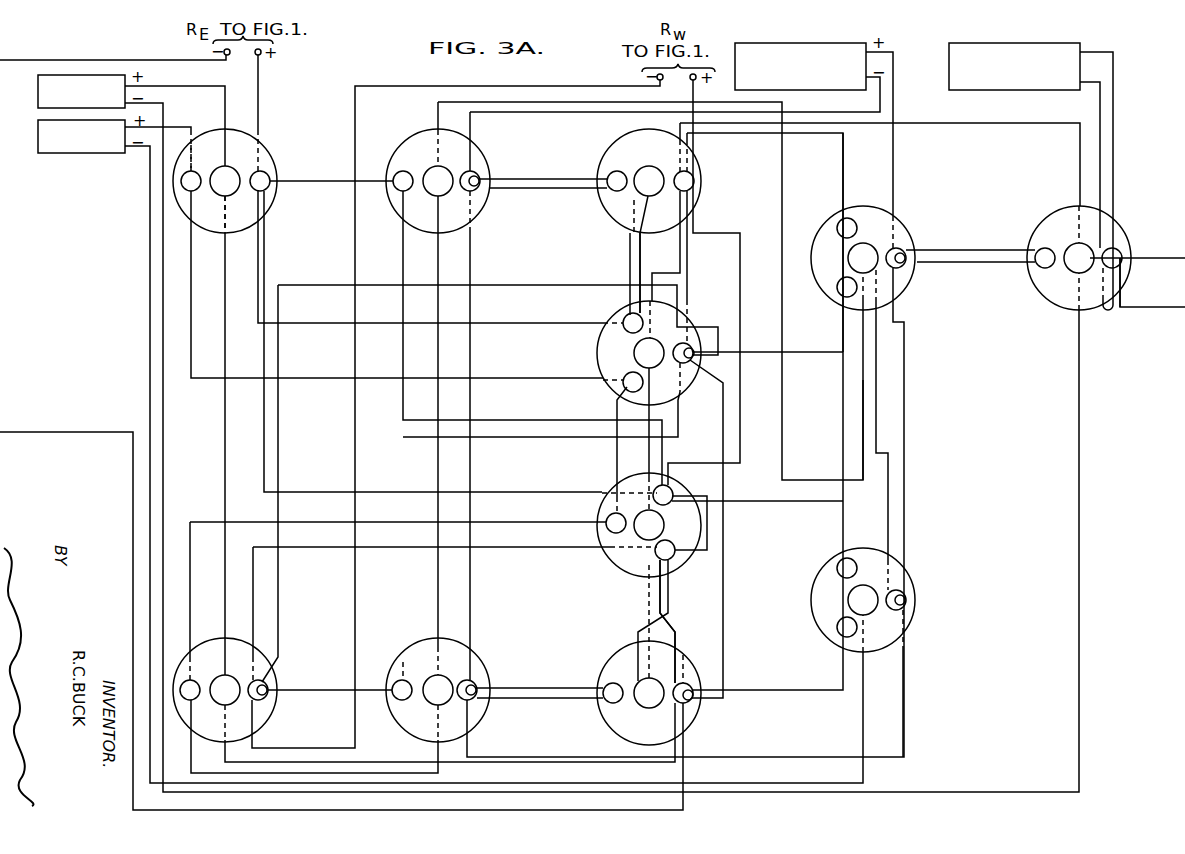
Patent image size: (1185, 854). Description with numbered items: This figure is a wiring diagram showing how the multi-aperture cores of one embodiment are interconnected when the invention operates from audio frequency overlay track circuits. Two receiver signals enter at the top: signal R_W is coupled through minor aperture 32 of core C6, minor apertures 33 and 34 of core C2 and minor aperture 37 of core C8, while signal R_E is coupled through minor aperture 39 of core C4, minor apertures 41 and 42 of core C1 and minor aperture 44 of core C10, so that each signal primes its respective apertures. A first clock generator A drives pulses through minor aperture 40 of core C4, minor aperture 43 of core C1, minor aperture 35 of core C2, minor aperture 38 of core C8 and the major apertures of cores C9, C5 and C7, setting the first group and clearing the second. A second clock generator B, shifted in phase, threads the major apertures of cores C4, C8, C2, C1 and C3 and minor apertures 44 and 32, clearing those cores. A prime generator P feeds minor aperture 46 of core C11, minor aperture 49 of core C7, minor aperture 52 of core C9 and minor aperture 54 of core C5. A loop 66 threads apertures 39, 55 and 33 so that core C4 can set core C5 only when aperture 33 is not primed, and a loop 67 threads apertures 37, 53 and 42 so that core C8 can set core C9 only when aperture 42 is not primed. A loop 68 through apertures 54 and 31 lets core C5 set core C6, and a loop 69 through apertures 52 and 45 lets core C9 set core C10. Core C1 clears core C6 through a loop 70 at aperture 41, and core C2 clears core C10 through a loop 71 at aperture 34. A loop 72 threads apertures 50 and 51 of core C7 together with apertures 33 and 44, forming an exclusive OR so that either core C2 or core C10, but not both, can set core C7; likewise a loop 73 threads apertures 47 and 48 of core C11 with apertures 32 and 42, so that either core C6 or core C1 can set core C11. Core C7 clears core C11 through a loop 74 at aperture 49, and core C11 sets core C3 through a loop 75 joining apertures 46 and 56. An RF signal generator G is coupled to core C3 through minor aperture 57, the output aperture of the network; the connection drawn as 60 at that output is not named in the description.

The first clock generator A is at (38, 138).
The second clock generator B is at (38, 94).
The prime generator P is at (800, 43).
The RF signal generator G is at (1012, 43).
The core C1 is at (611, 315).
The core C2 is at (609, 481).
The core C3 is at (1120, 222).
The core C4 is at (270, 150).
The core C5 is at (478, 150).
The core C6 is at (705, 164).
The core C7 is at (812, 603).
The core C8 is at (266, 680).
The core C9 is at (470, 656).
The core C10 is at (601, 660).
The core C11 is at (903, 222).
The minor aperture 31 is at (612, 190).
The minor aperture 32 is at (697, 186).
The minor aperture 33 is at (672, 490).
The minor aperture 34 is at (678, 557).
The minor aperture 35 is at (604, 533).
The minor aperture 37 is at (268, 694).
The minor aperture 38 is at (184, 701).
The minor aperture 39 is at (270, 180).
The minor aperture 40 is at (190, 193).
The minor aperture 41 is at (621, 330).
The minor aperture 42 is at (688, 362).
The minor aperture 43 is at (623, 388).
The minor aperture 44 is at (691, 703).
The minor aperture 45 is at (607, 702).
The minor aperture 46 is at (905, 255).
The minor aperture 47 is at (840, 291).
The minor aperture 48 is at (840, 224).
The minor aperture 49 is at (907, 600).
The minor aperture 50 is at (836, 633).
The minor aperture 51 is at (836, 570).
The minor aperture 52 is at (478, 686).
The minor aperture 53 is at (394, 701).
The minor aperture 54 is at (480, 190).
The minor aperture 55 is at (400, 191).
The minor aperture 56 is at (1040, 250).
The minor aperture 57 is at (1122, 257).
The load connection 60 is at (1178, 303).
The loop 66 is at (340, 172).
The loop 67 is at (314, 690).
The loop 68 is at (532, 181).
The loop 69 is at (536, 687).
The loop 70 is at (628, 258).
The loop 71 is at (640, 626).
The loop 72 is at (735, 501).
The loop 73 is at (843, 185).
The loop 74 is at (862, 408).
The loop 75 is at (962, 255).